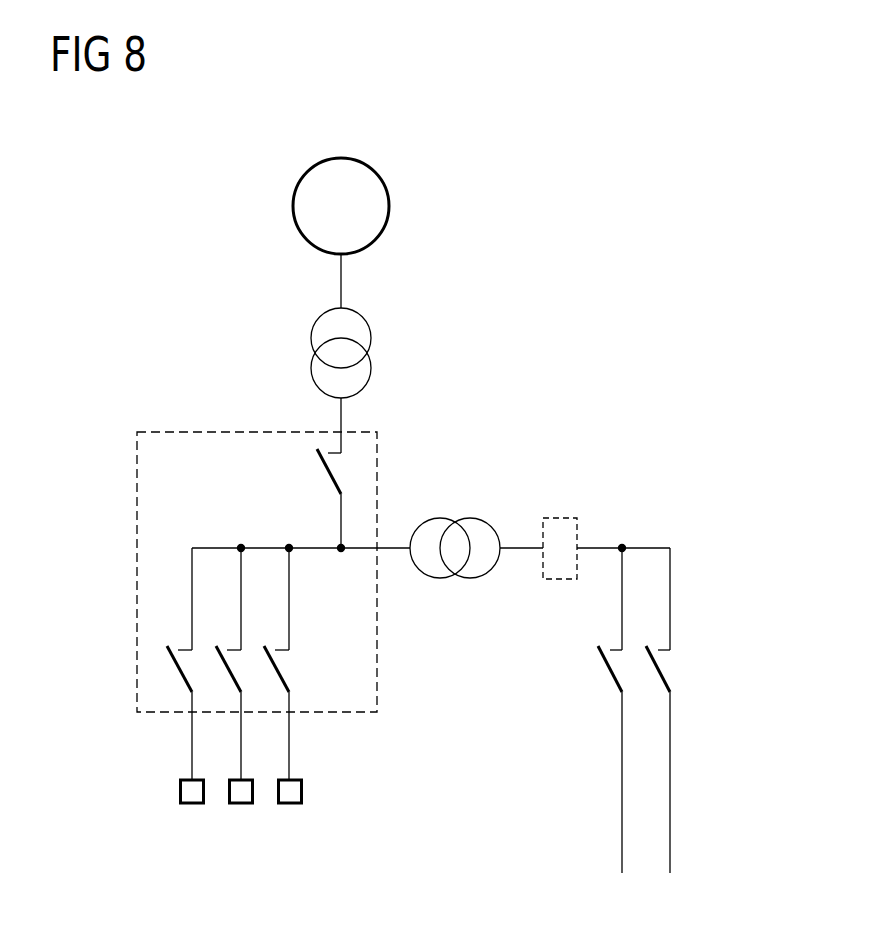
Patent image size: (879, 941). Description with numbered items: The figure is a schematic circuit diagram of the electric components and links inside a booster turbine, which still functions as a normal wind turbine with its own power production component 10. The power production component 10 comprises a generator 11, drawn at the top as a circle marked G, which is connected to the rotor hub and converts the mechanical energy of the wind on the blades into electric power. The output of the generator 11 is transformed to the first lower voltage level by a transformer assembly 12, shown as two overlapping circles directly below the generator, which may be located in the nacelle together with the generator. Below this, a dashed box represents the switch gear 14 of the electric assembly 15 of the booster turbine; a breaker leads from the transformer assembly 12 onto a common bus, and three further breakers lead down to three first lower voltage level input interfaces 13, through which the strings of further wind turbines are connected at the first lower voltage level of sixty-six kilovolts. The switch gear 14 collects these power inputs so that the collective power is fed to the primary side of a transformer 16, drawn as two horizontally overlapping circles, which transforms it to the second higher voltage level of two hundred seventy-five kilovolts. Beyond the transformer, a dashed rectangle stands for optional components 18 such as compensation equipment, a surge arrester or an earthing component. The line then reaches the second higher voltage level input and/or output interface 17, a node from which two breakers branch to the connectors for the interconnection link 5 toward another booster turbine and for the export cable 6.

The interconnection link 5 is at (670, 778).
The export cable 6 is at (622, 778).
The power production component 10 is at (397, 259).
The generator 11 is at (341, 158).
The transformer assembly 12 is at (296, 351).
The first lower voltage level input interfaces 13 is at (331, 794).
The switch gear 14 is at (137, 478).
The electric assembly 15 is at (714, 586).
The transformer 16 is at (458, 503).
The second higher voltage level input and/or output interface 17 is at (650, 520).
The optional components 18 is at (565, 518).